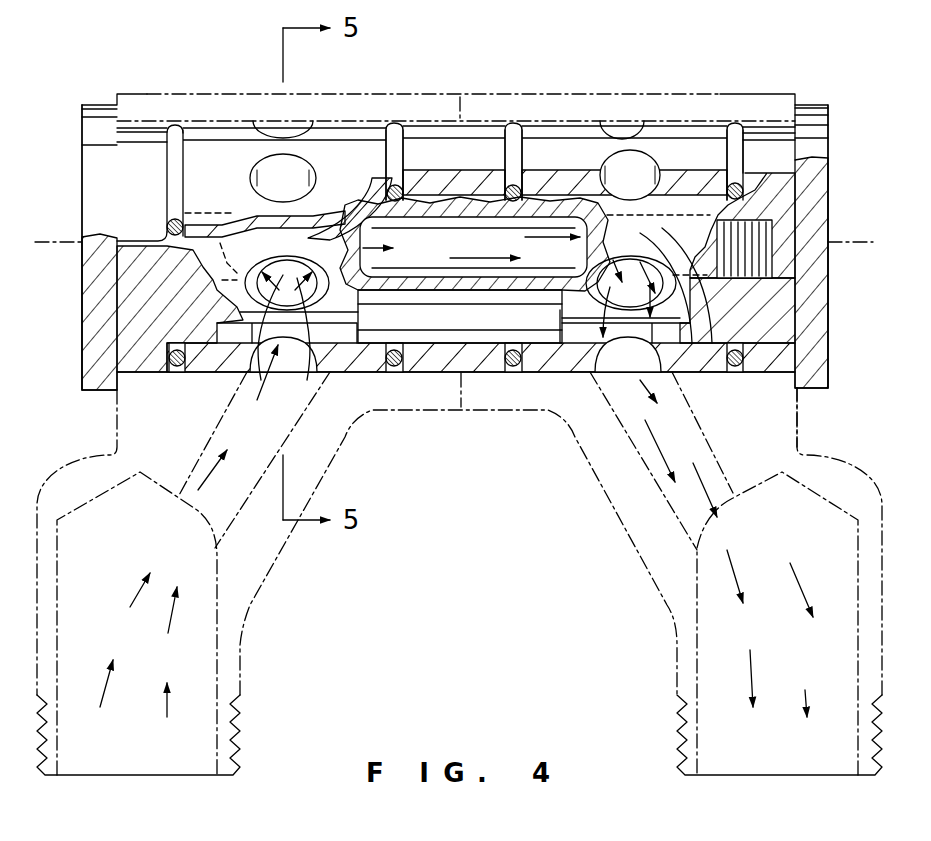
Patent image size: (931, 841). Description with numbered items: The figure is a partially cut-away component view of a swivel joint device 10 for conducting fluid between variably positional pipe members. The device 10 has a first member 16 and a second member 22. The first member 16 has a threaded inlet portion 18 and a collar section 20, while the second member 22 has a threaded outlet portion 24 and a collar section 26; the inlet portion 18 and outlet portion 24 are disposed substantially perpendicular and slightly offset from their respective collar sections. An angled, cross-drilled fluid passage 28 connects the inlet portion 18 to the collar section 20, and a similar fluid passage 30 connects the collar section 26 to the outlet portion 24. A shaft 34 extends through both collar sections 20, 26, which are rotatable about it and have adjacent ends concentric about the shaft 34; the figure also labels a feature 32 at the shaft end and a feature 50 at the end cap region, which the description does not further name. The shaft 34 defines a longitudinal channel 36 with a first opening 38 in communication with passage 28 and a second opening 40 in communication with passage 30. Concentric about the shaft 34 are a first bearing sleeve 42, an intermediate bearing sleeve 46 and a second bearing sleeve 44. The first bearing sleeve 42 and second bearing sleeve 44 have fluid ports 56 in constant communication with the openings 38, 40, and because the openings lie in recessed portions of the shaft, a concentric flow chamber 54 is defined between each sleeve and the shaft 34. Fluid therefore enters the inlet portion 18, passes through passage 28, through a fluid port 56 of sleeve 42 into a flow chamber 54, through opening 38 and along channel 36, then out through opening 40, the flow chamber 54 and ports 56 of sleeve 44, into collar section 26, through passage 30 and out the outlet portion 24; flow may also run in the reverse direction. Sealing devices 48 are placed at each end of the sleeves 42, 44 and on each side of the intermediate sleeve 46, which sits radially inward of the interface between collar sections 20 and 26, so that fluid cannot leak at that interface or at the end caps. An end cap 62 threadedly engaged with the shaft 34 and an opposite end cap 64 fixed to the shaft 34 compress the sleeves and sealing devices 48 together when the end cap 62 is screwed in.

The device 10 is at (582, 33).
The first member 16 is at (330, 470).
The inlet portion 18 is at (118, 775).
The collar section 20 is at (370, 90).
The second member 22 is at (803, 427).
The outlet portion 24 is at (800, 775).
The collar section 26 is at (633, 90).
The fluid passage 28 is at (223, 437).
The fluid passage 30 is at (690, 437).
The bore 32 is at (843, 233).
The shaft 34 is at (707, 345).
The longitudinal channel 36 is at (416, 251).
The first opening 38 is at (295, 330).
The second opening 40 is at (690, 375).
The first bearing sleeve 42 is at (218, 143).
The second bearing sleeve 44 is at (687, 137).
The intermediate bearing sleeve 46 is at (463, 147).
The sealing device 48 is at (397, 123).
The end cap 50 is at (835, 95).
The concentric flow chamber 54 is at (627, 197).
The fluid port 56 is at (620, 140).
The end cap 62 is at (833, 140).
The end cap 64 is at (80, 173).